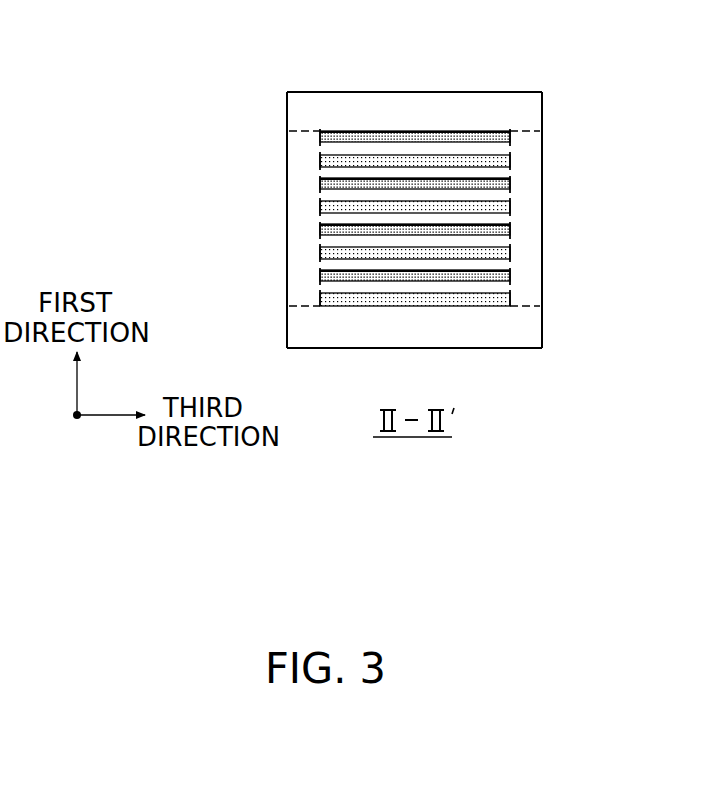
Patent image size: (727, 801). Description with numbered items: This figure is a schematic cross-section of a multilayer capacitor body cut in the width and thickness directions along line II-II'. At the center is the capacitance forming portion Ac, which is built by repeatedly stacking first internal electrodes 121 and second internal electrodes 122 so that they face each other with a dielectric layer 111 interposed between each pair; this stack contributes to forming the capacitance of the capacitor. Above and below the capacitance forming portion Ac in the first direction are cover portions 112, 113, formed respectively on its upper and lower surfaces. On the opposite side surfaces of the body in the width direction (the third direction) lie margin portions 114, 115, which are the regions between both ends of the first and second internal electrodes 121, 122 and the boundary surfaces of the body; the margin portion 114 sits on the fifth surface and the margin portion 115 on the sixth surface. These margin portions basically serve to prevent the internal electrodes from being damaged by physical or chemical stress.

The cover portion 112 is at (421, 110).
The margin portion 115 is at (535, 245).
The cover portion 113 is at (535, 325).
The margin portion 114 is at (305, 259).
The dielectric layer 111 is at (505, 148).
The first internal electrode 121 is at (510, 131).
The second internal electrode 122 is at (510, 157).
The capacitance forming portion Ac is at (319, 222).